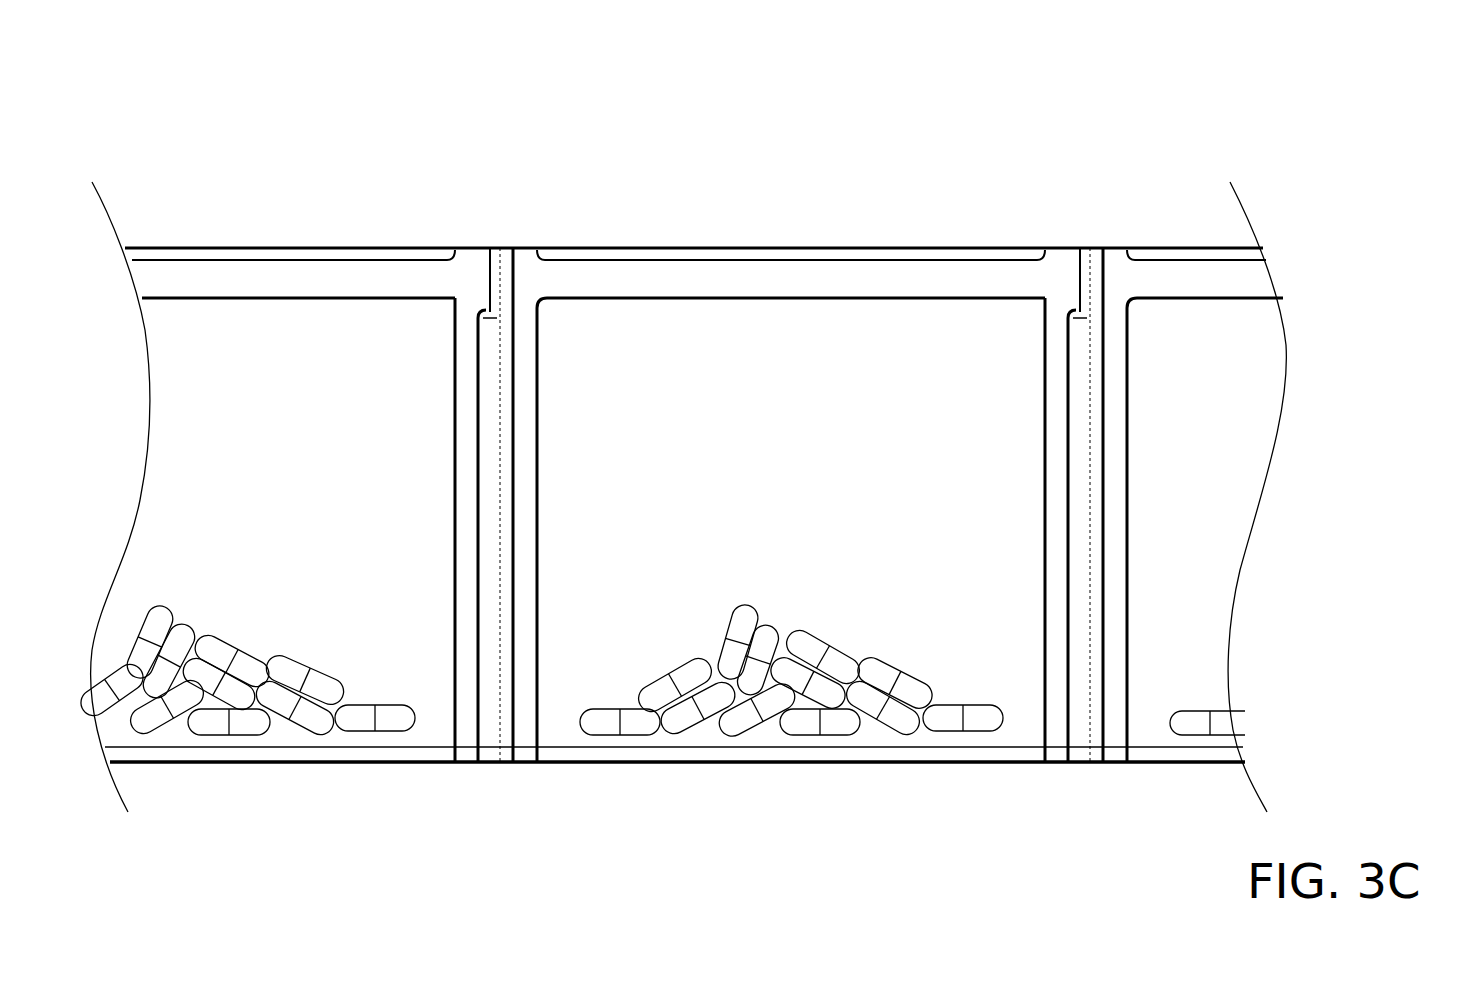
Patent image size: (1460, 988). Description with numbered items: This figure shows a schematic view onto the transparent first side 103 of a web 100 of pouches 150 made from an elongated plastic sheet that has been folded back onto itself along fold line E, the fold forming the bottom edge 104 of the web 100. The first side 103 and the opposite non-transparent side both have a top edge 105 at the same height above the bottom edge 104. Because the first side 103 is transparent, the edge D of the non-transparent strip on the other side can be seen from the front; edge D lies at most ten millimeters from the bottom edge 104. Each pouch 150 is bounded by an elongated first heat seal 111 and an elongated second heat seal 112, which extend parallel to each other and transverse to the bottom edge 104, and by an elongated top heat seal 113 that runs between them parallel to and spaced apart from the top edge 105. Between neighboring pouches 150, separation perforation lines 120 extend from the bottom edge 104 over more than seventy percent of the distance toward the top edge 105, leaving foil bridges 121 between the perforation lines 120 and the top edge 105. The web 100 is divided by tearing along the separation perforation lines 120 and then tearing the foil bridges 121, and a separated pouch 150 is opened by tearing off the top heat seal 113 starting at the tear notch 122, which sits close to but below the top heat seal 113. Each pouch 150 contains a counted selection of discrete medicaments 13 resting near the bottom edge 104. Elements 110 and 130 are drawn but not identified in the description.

The web 100 is at (195, 115).
The first side 103 is at (1267, 327).
The bottom edge 104 is at (893, 765).
The top edge 105 is at (948, 248).
The top plate 110 is at (165, 272).
The first heat seal 111 is at (527, 445).
The second heat seal 112 is at (465, 690).
The top heat seal 113 is at (255, 272).
The separation perforation line 120 is at (497, 735).
The foil bridge 121 is at (502, 277).
The tear notch 122 is at (486, 310).
The bottom layer 130 is at (672, 733).
The pouch 150 is at (310, 360).
The discrete medicaments 13 is at (243, 662).
The edge of the non-transparent strip D is at (1243, 747).
The fold line E is at (828, 763).